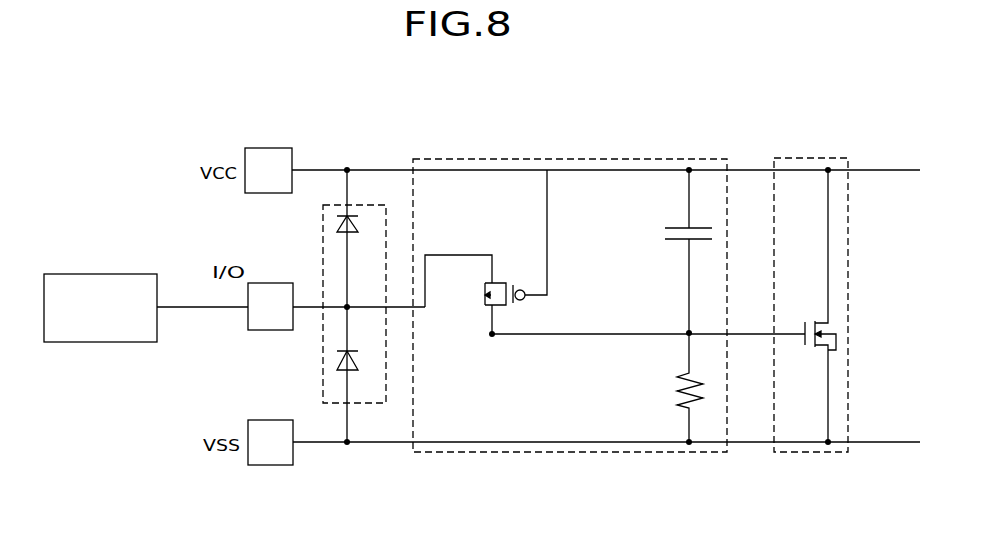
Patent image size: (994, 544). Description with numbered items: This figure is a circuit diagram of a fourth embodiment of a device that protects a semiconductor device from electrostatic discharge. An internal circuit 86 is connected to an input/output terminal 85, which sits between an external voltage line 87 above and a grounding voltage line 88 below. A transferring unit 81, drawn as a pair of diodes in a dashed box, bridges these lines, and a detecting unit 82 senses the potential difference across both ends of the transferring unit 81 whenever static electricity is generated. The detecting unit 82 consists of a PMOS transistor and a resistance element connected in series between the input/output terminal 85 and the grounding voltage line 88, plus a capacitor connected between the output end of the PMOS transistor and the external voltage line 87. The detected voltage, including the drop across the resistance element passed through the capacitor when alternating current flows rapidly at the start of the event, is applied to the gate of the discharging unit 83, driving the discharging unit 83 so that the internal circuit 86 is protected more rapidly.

The transferring unit 81 is at (368, 201).
The detecting unit 82 is at (545, 158).
The discharging unit 83 is at (806, 158).
The input/output terminal 85 is at (266, 331).
The internal circuit 86 is at (124, 343).
The external voltage line 87 is at (317, 167).
The grounding voltage line 88 is at (313, 444).